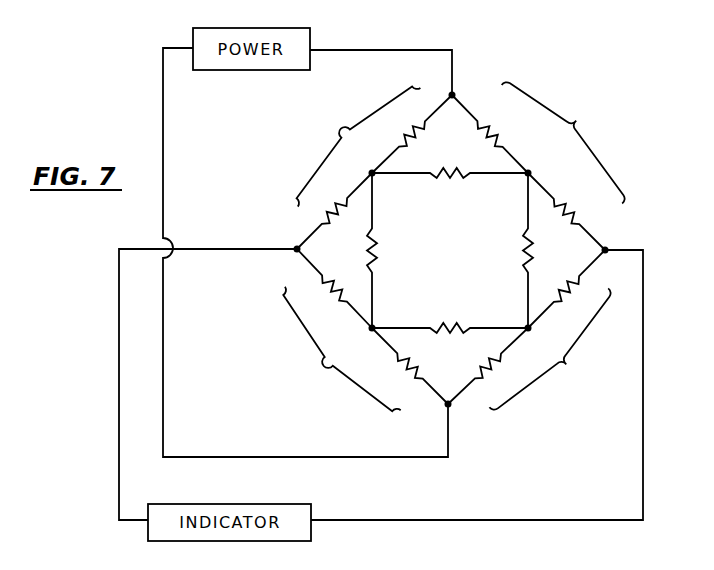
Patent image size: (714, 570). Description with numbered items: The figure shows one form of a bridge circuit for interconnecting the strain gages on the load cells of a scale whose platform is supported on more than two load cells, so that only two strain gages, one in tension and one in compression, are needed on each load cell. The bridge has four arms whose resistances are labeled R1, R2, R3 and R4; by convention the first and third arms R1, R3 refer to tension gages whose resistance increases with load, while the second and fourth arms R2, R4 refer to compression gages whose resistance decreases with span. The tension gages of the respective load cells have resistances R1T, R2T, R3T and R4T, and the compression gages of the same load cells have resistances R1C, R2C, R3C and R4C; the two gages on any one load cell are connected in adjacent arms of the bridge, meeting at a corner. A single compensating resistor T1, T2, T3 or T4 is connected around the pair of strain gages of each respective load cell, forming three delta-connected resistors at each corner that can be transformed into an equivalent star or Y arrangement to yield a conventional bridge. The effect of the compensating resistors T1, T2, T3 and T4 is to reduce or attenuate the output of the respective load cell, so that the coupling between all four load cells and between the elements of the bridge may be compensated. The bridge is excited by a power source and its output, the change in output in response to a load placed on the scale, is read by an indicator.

The first bridge arm resistance R1 is at (359, 146).
The second bridge arm resistance R2 is at (563, 142).
The third bridge arm resistance R3 is at (549, 348).
The fourth bridge arm resistance R4 is at (341, 349).
The tension strain gage resistance of first load cell R1T is at (412, 134).
The compression strain gage resistance of first load cell R1C is at (493, 134).
The tension strain gage resistance of second load cell R2T is at (566, 289).
The compression strain gage resistance of second load cell R2C is at (566, 211).
The tension strain gage resistance of third load cell R3T is at (488, 366).
The compression strain gage resistance of third load cell R3C is at (405, 366).
The tension strain gage resistance of fourth load cell R4T is at (334, 211).
The compression strain gage resistance of fourth load cell R4C is at (334, 288).
The compensating resistor T1 is at (450, 185).
The compensating resistor T2 is at (512, 250).
The compensating resistor T3 is at (450, 320).
The compensating resistor T4 is at (386, 250).